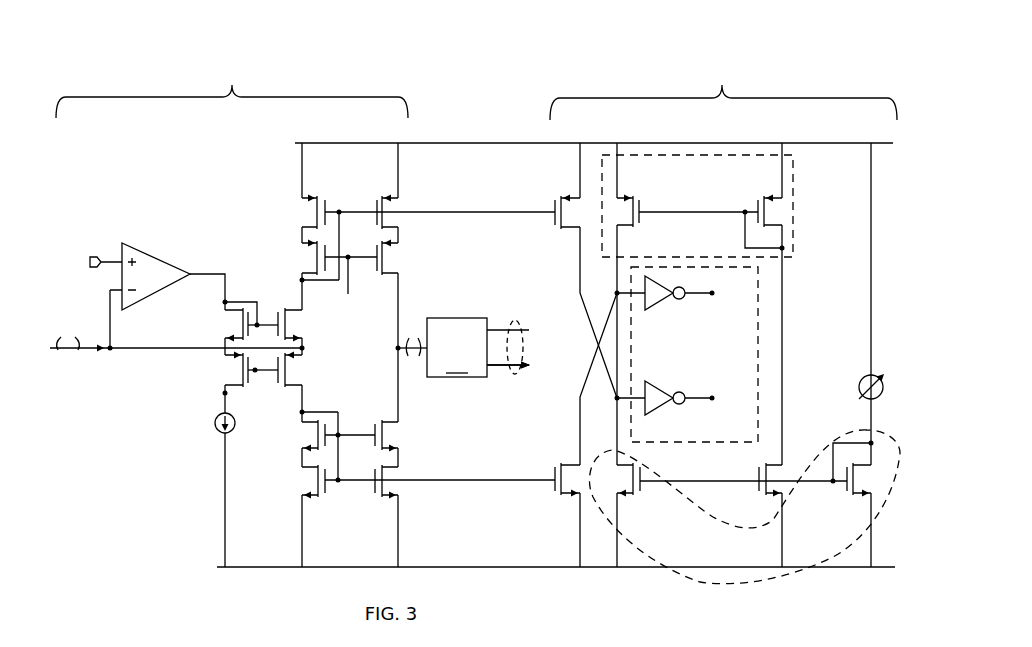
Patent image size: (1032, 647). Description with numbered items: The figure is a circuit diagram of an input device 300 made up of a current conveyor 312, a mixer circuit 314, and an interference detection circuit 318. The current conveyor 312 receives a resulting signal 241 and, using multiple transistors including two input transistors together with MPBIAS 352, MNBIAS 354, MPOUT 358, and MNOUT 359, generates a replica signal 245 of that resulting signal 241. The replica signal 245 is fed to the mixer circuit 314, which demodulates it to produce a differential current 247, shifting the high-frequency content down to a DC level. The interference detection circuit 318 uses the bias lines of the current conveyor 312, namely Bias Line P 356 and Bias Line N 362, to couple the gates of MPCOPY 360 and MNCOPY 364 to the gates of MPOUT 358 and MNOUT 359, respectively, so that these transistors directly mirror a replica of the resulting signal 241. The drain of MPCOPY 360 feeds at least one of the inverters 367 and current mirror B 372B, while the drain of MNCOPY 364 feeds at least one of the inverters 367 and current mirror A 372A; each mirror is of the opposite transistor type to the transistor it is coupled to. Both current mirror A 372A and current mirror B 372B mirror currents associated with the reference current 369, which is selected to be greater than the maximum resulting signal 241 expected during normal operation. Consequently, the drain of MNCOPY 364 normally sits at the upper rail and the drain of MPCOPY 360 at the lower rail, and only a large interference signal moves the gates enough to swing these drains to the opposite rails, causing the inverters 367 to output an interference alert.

The input device 300 is at (448, 91).
The current conveyor 312 is at (306, 307).
The interference detection circuit 318 is at (702, 307).
The resulting signal 241 is at (77, 359).
The replica signal 245 is at (413, 365).
The differential current 247 is at (527, 373).
The mixer circuit 314 is at (457, 347).
The MPBIAS 352 is at (302, 214).
The MNBIAS 354 is at (298, 478).
The Bias Line P 356 is at (531, 205).
The MPOUT 358 is at (399, 219).
The MNOUT 359 is at (415, 491).
The MPCOPY 360 is at (545, 231).
The Bias Line N 362 is at (531, 478).
The MNCOPY 364 is at (558, 499).
The inverters 367 is at (683, 373).
The reference current 369 is at (854, 393).
The current mirror A 372A is at (684, 208).
The current mirror B 372B is at (649, 556).